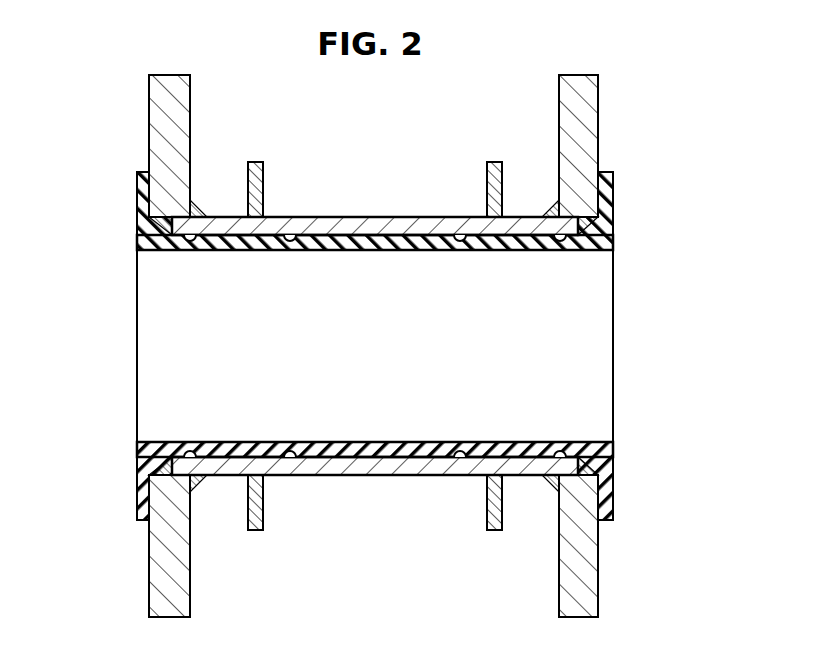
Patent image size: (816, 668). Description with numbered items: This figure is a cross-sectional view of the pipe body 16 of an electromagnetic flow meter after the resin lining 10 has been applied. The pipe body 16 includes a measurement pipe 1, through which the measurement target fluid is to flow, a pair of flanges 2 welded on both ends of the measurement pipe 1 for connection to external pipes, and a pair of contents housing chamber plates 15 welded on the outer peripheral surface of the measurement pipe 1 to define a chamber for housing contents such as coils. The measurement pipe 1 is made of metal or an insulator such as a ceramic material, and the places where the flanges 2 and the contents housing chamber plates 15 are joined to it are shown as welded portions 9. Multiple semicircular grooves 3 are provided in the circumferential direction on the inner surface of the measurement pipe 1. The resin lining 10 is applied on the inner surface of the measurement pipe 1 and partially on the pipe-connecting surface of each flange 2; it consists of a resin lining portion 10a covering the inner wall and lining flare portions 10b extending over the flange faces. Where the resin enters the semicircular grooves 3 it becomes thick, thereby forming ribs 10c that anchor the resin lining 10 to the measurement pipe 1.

The measurement pipe 1 is at (373, 217).
The flange 2 is at (149, 113).
The semicircular groove 3 is at (206, 215).
The welded portion 9 is at (197, 208).
The resin lining 10 is at (390, 358).
The resin lining portion 10a is at (412, 456).
The lining flare portion 10b is at (137, 486).
The rib 10c is at (188, 241).
The contents housing chamber plate 15 is at (256, 160).
The pipe body 16 is at (331, 485).